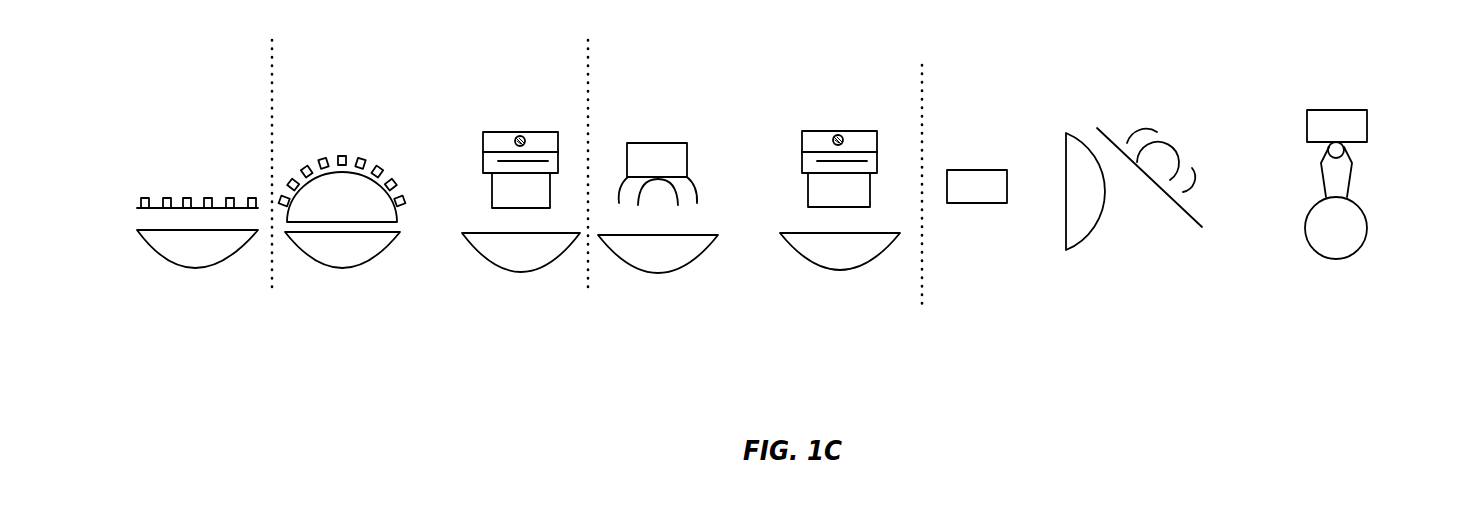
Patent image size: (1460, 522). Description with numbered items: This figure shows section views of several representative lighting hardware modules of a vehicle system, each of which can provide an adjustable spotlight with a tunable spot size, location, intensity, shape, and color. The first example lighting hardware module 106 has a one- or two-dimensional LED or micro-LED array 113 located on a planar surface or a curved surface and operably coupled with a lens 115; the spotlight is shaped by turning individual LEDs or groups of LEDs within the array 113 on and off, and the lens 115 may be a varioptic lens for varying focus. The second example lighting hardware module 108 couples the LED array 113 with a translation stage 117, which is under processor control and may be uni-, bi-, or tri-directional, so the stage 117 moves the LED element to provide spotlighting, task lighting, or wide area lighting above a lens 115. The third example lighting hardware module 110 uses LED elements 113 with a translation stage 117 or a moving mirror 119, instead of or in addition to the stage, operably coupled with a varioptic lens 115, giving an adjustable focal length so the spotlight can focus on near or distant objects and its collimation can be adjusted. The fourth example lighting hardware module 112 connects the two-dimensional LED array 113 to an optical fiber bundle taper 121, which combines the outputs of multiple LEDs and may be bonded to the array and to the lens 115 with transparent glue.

The first example lighting hardware module 106 is at (259, 363).
The second example lighting hardware module 108 is at (583, 363).
The third example lighting hardware module 110 is at (923, 363).
The fourth example lighting hardware module 112 is at (1311, 363).
The LED array 113 is at (187, 197).
The lens 115 is at (200, 255).
The translation stage 117 is at (493, 132).
The moving mirror 119 is at (1108, 127).
The optical fiber bundle taper 121 is at (1353, 178).